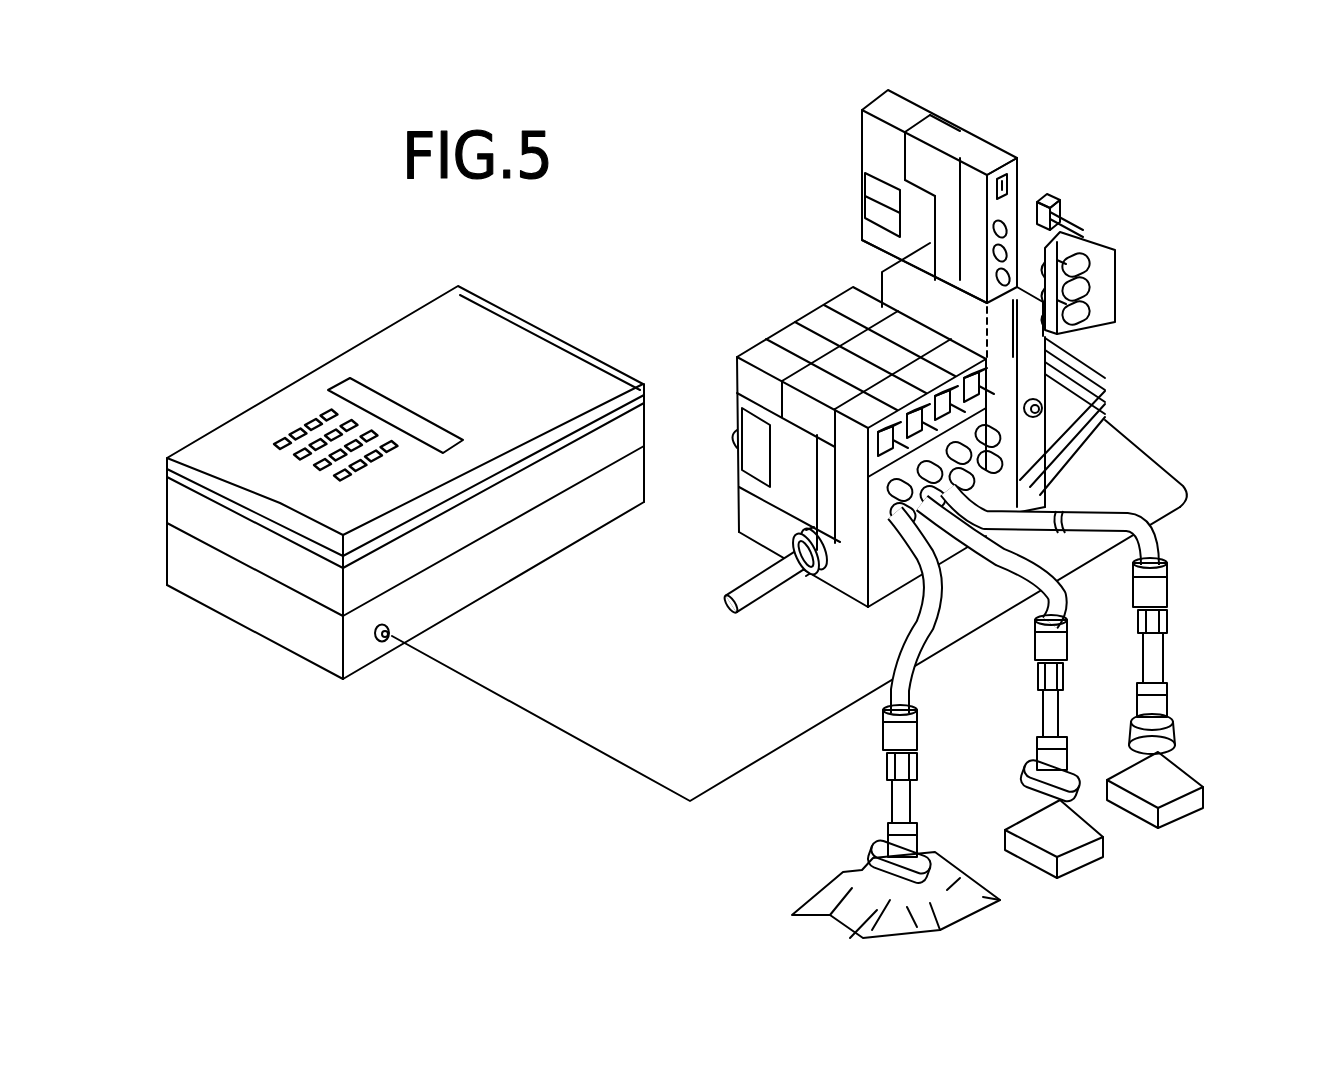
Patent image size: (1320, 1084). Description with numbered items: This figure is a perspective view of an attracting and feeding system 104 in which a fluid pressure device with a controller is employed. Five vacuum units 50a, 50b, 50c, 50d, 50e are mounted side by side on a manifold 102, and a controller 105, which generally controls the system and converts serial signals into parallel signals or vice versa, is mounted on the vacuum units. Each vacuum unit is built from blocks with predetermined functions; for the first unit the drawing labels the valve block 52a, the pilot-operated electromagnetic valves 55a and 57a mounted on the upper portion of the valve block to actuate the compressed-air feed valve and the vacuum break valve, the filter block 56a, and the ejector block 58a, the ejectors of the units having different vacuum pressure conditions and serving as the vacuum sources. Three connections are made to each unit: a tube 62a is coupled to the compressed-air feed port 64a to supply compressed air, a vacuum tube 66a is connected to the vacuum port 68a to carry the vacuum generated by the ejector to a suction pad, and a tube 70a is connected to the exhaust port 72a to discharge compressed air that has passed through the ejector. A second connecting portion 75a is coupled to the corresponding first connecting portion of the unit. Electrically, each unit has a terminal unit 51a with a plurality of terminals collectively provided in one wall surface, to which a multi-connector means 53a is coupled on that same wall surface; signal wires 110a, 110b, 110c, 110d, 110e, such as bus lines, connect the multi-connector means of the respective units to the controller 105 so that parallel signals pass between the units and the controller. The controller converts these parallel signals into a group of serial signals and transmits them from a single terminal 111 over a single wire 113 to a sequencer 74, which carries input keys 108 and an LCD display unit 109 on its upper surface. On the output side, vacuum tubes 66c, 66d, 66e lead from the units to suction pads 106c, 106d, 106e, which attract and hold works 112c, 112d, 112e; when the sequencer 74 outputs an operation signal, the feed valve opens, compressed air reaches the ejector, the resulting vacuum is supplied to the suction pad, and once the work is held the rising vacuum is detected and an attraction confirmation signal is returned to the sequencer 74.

The sequencer 74 is at (388, 350).
The input keys 108 is at (283, 443).
The display unit 109 is at (340, 385).
The single wire 113 is at (528, 717).
The attracting and feeding system 104 is at (576, 774).
The manifold 102 is at (845, 590).
The controller 105 is at (880, 283).
The vacuum unit 50a is at (913, 185).
The vacuum unit 50b is at (815, 282).
The vacuum unit 50c is at (787, 300).
The vacuum unit 50d is at (762, 321).
The vacuum unit 50e is at (738, 341).
The terminal unit 51a is at (1005, 190).
The valve block 52a is at (873, 196).
The multi-connector means 53a is at (1068, 205).
The pilot-operated electromagnetic valve 55a is at (963, 137).
The filter block 56a is at (868, 177).
The pilot-operated electromagnetic valve 57a is at (858, 118).
The ejector block 58a is at (885, 242).
The tube 62a is at (1095, 262).
The compressed-air feed port 64a is at (1060, 200).
The vacuum tube 66a is at (1110, 318).
The vacuum port 68a is at (897, 160).
The tube 70a is at (1125, 300).
The exhaust port 72a is at (944, 190).
The second connecting portion 75a is at (1087, 228).
The signal wire 110a is at (1095, 290).
The signal wire 110b is at (1110, 383).
The signal wire 110c is at (1110, 396).
The signal wire 110d is at (1110, 409).
The signal wire 110e is at (1150, 460).
The single terminal 111 is at (1100, 360).
The vacuum tube 66c is at (1168, 555).
The vacuum tube 66d is at (1035, 612).
The vacuum tube 66e is at (885, 690).
The suction pad 106c is at (1175, 740).
The suction pad 106d is at (1030, 790).
The suction pad 106e is at (880, 850).
The work 112c is at (1185, 775).
The work 112d is at (1105, 848).
The work 112e is at (1000, 902).